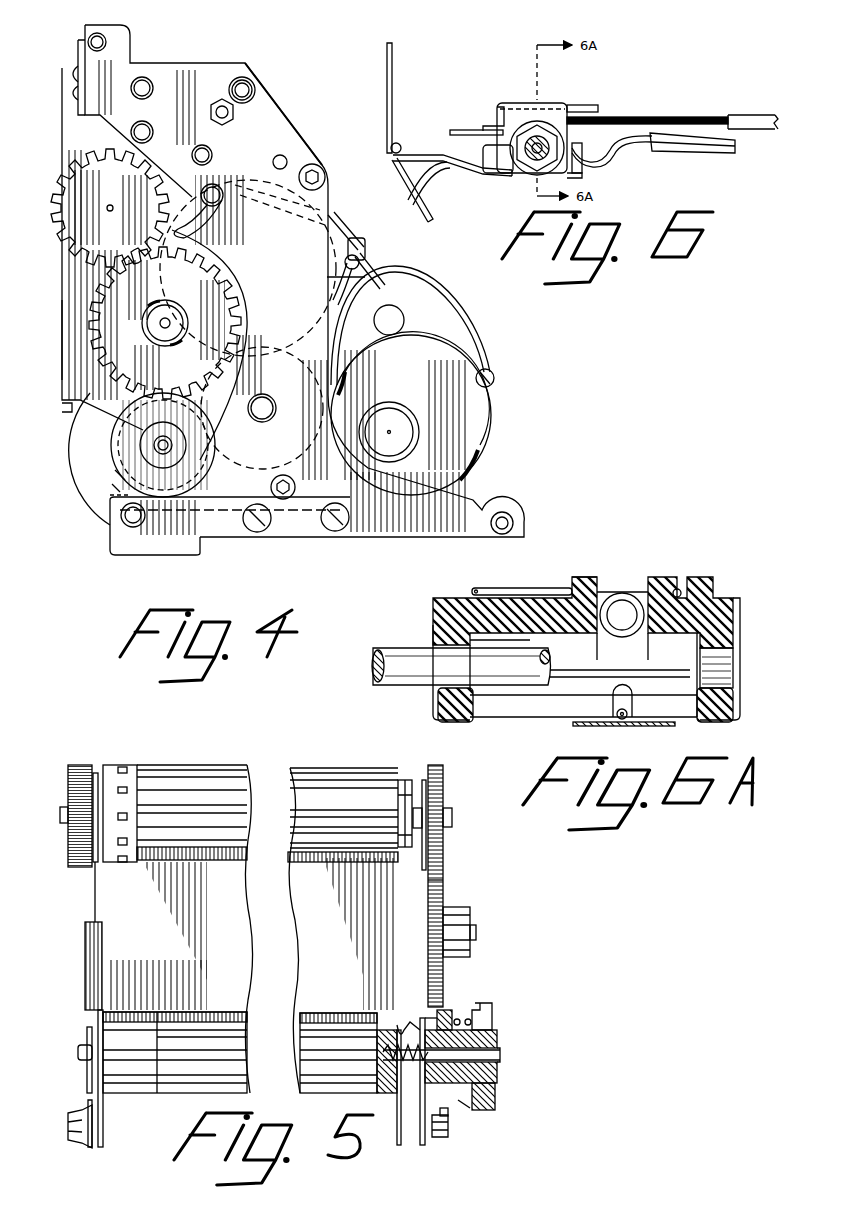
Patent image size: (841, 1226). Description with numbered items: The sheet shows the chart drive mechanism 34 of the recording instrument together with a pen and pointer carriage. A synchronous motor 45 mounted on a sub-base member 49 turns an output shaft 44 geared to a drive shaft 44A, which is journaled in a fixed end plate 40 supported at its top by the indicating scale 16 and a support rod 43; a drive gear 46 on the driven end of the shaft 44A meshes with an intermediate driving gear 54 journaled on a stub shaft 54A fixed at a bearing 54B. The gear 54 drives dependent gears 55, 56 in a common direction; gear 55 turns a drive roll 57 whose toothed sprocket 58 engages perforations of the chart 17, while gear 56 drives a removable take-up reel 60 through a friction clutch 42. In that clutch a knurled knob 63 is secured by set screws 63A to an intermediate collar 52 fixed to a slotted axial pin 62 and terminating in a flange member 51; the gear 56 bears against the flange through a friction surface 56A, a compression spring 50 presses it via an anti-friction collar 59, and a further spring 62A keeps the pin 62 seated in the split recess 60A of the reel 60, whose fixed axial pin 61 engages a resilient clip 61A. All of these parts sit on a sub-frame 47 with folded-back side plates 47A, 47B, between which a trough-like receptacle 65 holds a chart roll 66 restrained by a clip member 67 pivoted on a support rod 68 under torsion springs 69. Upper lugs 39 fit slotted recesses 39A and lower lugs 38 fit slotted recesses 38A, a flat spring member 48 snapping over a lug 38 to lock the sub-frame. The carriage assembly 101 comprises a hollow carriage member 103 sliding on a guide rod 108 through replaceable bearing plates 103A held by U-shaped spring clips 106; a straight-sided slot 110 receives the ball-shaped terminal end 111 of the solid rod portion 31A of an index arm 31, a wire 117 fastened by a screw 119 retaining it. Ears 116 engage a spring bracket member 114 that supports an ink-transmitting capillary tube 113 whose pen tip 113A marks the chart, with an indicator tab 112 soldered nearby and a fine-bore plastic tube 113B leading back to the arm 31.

In FIG. 4, the indicating scale 16 is at (80, 48).
In FIG. 4, the chart 17 is at (65, 428).
In FIG. 6, the index arm 31 is at (740, 115).
In FIG. 6, the solid rod portion 31A is at (660, 117).
In FIG. 4, the chart drive mechanism 34 is at (185, 58).
In FIG. 4, the outwardly projecting lug 38 is at (128, 517).
In FIG. 5, the outwardly projecting lug 38 is at (68, 1128).
In FIG. 4, the slotted recess 38A is at (110, 498).
In FIG. 4, the outwardly projecting lug 39 is at (214, 203).
In FIG. 5, the outwardly projecting lug 39 is at (62, 810).
In FIG. 4, the slotted recess 39A is at (218, 190).
In FIG. 4, the end plate 40 is at (263, 102).
In FIG. 4, the friction clutch 42 is at (115, 487).
In FIG. 5, the friction clutch 42 is at (465, 1105).
In FIG. 4, the support rod 43 is at (325, 165).
In FIG. 4, the output shaft 44 is at (400, 320).
In FIG. 4, the drive shaft 44A is at (270, 412).
In FIG. 4, the motor 45 is at (470, 433).
In FIG. 4, the drive gear 46 is at (221, 404).
In FIG. 4, the sub-frame 47 is at (70, 340).
In FIG. 5, the sub-frame 47 is at (120, 887).
In FIG. 4, the side plate 47A is at (75, 368).
In FIG. 5, the side plate 47A is at (424, 780).
In FIG. 5, the side plate 47B is at (99, 770).
In FIG. 4, the flat spring member 48 is at (162, 520).
In FIG. 4, the sub-base member 49 is at (505, 500).
In FIG. 5, the compression spring 50 is at (444, 1116).
In FIG. 5, the flange member 51 is at (406, 1087).
In FIG. 4, the intermediate collar 52 is at (143, 437).
In FIG. 5, the intermediate collar 52 is at (497, 1072).
In FIG. 4, the intermediate driving gear 54 is at (115, 305).
In FIG. 5, the intermediate driving gear 54 is at (445, 890).
In FIG. 4, the stub shaft 54A is at (172, 320).
In FIG. 5, the stub shaft 54A is at (477, 932).
In FIG. 4, the bearing 54B is at (172, 340).
In FIG. 5, the bearing 54B is at (470, 915).
In FIG. 4, the dependent gear 55 is at (88, 170).
In FIG. 5, the dependent gear 55 is at (445, 780).
In FIG. 5, the dependent gear 56 is at (443, 1022).
In FIG. 5, the friction surface 56A is at (435, 1023).
In FIG. 5, the drive roll 57 is at (184, 764).
In FIG. 5, the toothed sprocket 58 is at (127, 764).
In FIG. 5, the anti-friction collar 59 is at (445, 1027).
In FIG. 4, the take-up reel 60 is at (82, 455).
In FIG. 5, the take-up reel 60 is at (175, 1094).
In FIG. 5, the split recess 60A is at (383, 1050).
In FIG. 5, the fixed axial pin 61 is at (78, 1050).
In FIG. 5, the resilient clip 61A is at (88, 1063).
In FIG. 4, the slotted axial pin 62 is at (168, 448).
In FIG. 5, the slotted axial pin 62 is at (497, 1055).
In FIG. 5, the compression spring 62A is at (395, 1028).
In FIG. 4, the knurled knob 63 is at (115, 470).
In FIG. 5, the knurled knob 63 is at (497, 1100).
In FIG. 5, the set screw 63A is at (490, 1005).
In FIG. 4, the trough-like receptacle 65 is at (346, 287).
In FIG. 4, the chart roll 66 is at (338, 290).
In FIG. 4, the clip member 67 is at (330, 227).
In FIG. 4, the support rod 68 is at (356, 243).
In FIG. 4, the torsion spring 69 is at (360, 257).
In FIG. 6, the cable anchor assembly 101 is at (375, 68).
In FIG. 6, the carriage member 103 is at (552, 103).
In FIG. 6A, the carriage member 103 is at (702, 578).
In FIG. 6A, the bearing plate 103A is at (435, 627).
In FIG. 6, the spring clip 106 is at (515, 177).
In FIG. 6A, the spring clip 106 is at (436, 712).
In FIG. 6, the guide rod 108 is at (536, 138).
In FIG. 6A, the guide rod 108 is at (392, 687).
In FIG. 6A, the straight-sided slot 110 is at (592, 584).
In FIG. 6A, the ball-shaped terminal end 111 is at (622, 600).
In FIG. 6, the indicator tab 112 is at (393, 62).
In FIG. 6, the capillary tube 113 is at (452, 164).
In FIG. 6A, the capillary tube 113 is at (617, 710).
In FIG. 6, the pen tip 113A is at (430, 212).
In FIG. 6, the fine-bore plastic tube 113B is at (698, 154).
In FIG. 6, the spring bracket member 114 is at (580, 177).
In FIG. 6A, the spring bracket member 114 is at (643, 720).
In FIG. 6, the ear 116 is at (570, 176).
In FIG. 6, the wire 117 is at (598, 108).
In FIG. 6A, the wire 117 is at (546, 588).
In FIG. 6, the screw 119 is at (488, 124).